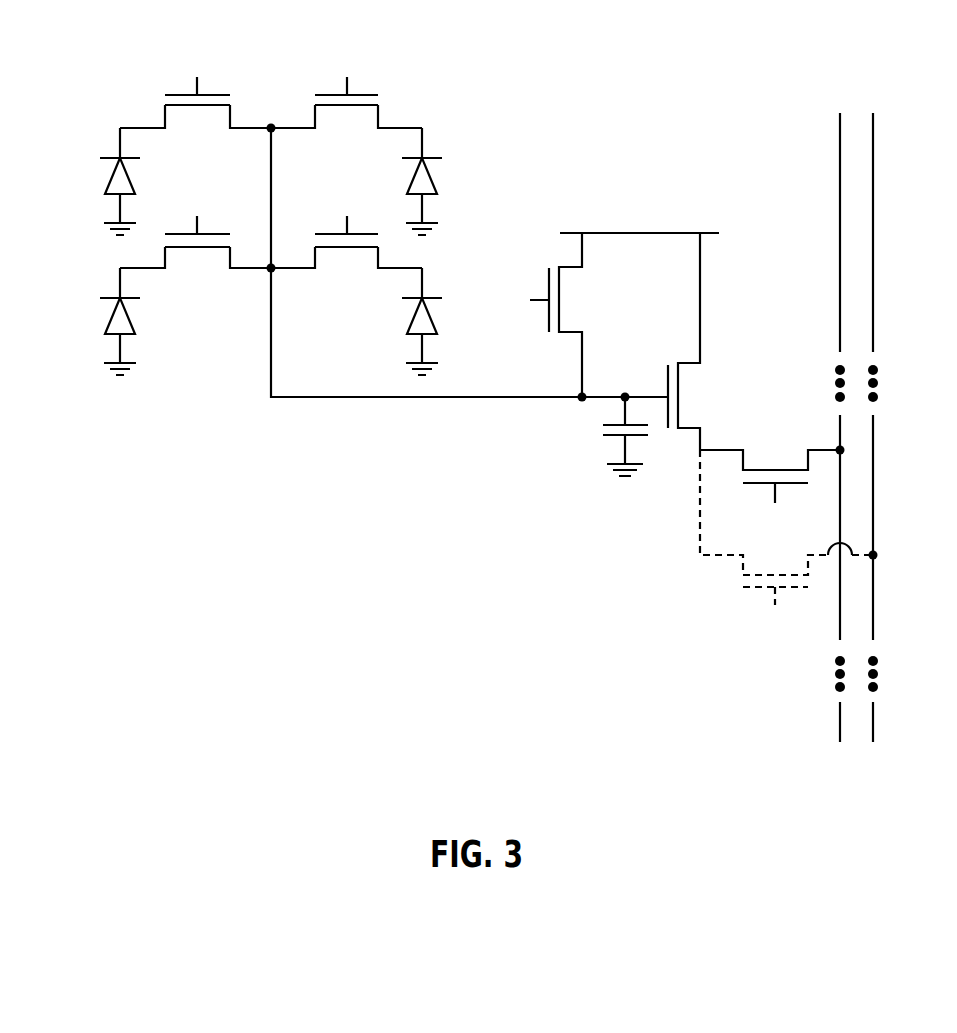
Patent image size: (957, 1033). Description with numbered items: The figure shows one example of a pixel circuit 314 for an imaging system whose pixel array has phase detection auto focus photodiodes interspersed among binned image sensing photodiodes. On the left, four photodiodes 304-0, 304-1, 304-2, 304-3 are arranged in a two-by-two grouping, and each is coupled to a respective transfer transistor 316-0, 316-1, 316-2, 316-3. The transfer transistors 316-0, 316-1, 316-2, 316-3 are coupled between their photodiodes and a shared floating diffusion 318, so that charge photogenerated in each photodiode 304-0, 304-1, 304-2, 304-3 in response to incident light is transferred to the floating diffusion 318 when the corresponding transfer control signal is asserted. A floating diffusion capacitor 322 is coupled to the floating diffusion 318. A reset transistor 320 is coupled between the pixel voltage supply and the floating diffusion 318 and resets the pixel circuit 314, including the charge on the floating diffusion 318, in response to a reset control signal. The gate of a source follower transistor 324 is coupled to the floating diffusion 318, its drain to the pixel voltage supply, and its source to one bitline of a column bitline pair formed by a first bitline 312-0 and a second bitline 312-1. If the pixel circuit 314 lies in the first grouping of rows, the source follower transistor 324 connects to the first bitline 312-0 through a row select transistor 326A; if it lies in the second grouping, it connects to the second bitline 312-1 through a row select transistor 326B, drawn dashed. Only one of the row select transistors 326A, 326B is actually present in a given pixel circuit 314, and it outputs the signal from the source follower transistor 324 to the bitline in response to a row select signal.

The pixel circuit 314 is at (618, 71).
The first bitline BL0 312-0 is at (830, 138).
The second bitline BL1 312-1 is at (878, 138).
The transfer transistor 316-0 is at (190, 118).
The transfer transistor 316-1 is at (349, 114).
The transfer transistor 316-2 is at (190, 258).
The transfer transistor 316-3 is at (349, 254).
The photodiode 304-0 is at (96, 196).
The photodiode 304-1 is at (440, 190).
The photodiode 304-2 is at (96, 338).
The photodiode 304-3 is at (440, 332).
The reset transistor 320 is at (578, 300).
The floating diffusion 318 is at (620, 402).
The floating diffusion capacitor 322 is at (636, 438).
The source follower transistor 324 is at (706, 372).
The row select transistor 326A is at (780, 450).
The row select transistor 326B is at (730, 580).